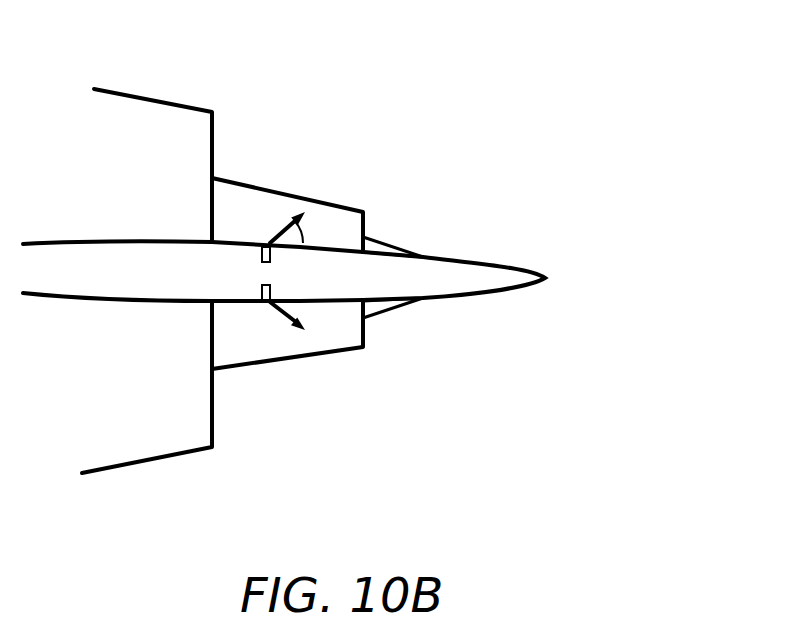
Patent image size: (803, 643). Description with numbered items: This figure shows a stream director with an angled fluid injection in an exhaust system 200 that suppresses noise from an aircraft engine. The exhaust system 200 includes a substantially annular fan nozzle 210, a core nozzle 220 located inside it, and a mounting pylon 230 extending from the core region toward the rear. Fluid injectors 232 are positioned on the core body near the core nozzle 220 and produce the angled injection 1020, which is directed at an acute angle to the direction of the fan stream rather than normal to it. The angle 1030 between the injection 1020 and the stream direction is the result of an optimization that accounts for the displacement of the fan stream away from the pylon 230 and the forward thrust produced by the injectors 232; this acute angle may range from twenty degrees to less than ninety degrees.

The exhaust system 200 is at (590, 70).
The fan nozzle 210 is at (124, 455).
The core nozzle 220 is at (292, 349).
The mounting pylon 230 is at (528, 288).
The fluid injector 232 is at (270, 258).
The injection 1020 is at (282, 235).
The angle 1030 is at (305, 228).